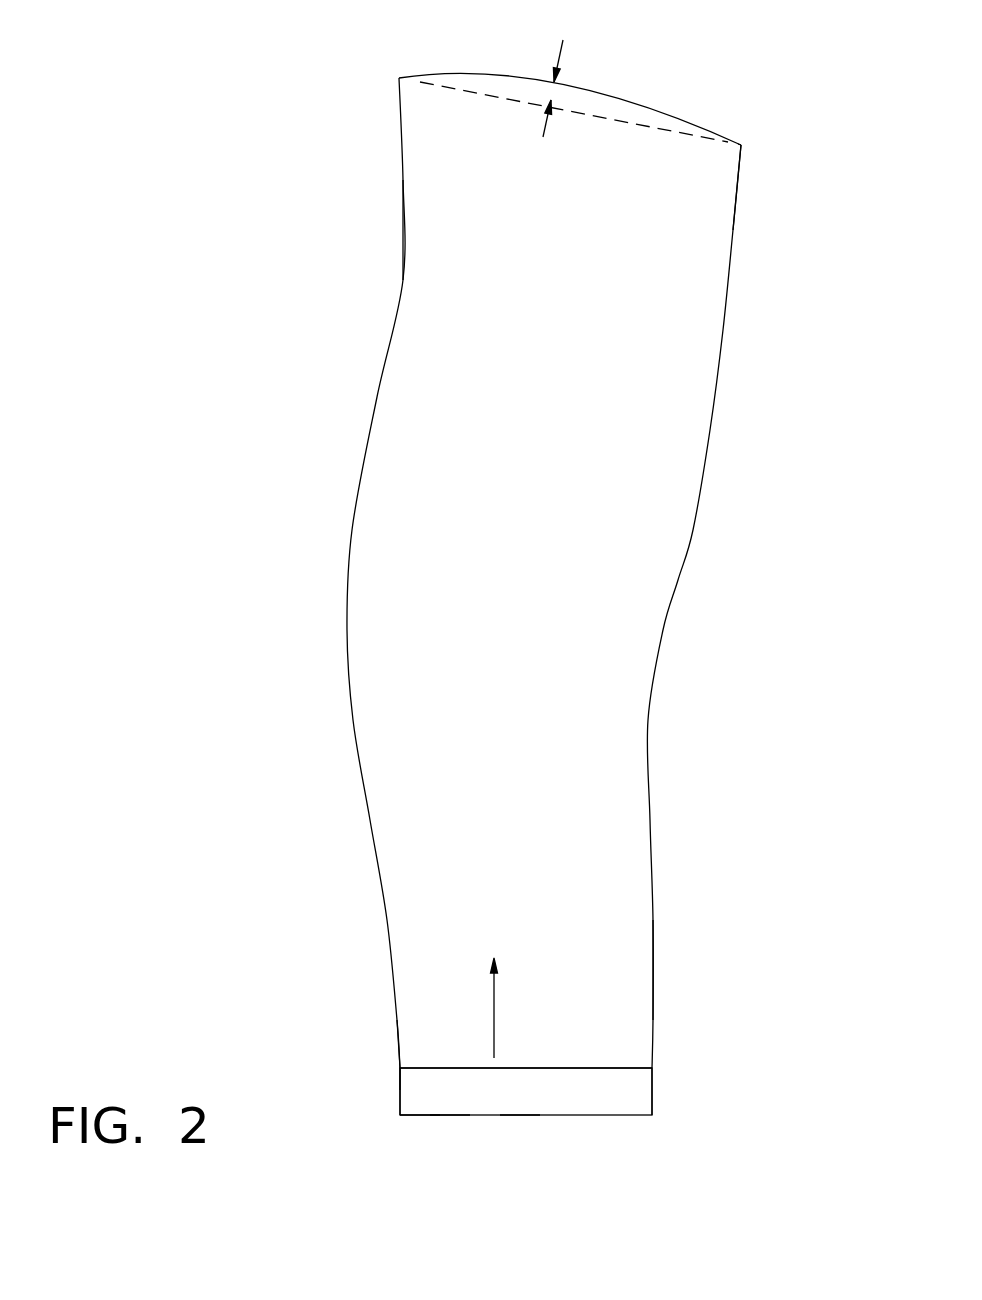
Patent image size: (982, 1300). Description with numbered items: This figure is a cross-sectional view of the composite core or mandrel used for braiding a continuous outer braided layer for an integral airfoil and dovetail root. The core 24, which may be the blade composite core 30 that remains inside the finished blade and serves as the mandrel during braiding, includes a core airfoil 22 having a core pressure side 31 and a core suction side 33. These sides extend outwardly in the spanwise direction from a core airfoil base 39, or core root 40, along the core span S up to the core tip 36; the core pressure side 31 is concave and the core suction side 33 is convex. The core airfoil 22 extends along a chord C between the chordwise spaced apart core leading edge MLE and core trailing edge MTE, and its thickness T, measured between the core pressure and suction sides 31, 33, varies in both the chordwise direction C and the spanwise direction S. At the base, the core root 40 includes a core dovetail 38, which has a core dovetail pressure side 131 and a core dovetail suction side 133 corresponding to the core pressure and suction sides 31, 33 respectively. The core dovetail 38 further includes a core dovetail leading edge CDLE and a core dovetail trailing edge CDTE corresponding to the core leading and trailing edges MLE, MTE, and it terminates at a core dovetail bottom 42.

The core airfoil 22 is at (490, 532).
The core 24 is at (294, 946).
The blade composite core 30 is at (668, 1010).
The core pressure side 31 is at (657, 543).
The core suction side 33 is at (643, 105).
The core tip 36 is at (741, 145).
The core dovetail 38 is at (593, 1102).
The core airfoil base 39 is at (615, 1070).
The core root 40 is at (443, 1093).
The core dovetail bottom 42 is at (432, 1115).
The core dovetail pressure side 131 is at (518, 1098).
The core dovetail suction side 133 is at (398, 1080).
The core leading edge MLE is at (403, 282).
The core trailing edge MTE is at (735, 218).
The chord C is at (508, 102).
The thickness T is at (547, 127).
The core span S is at (497, 1015).
The core dovetail leading edge CDLE is at (398, 1100).
The core dovetail trailing edge CDTE is at (653, 1103).